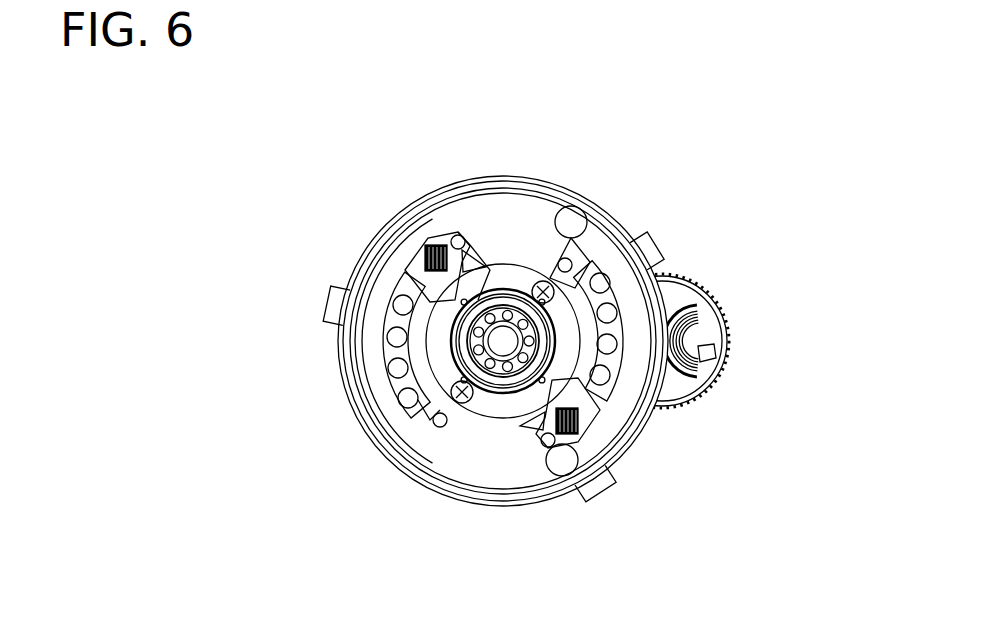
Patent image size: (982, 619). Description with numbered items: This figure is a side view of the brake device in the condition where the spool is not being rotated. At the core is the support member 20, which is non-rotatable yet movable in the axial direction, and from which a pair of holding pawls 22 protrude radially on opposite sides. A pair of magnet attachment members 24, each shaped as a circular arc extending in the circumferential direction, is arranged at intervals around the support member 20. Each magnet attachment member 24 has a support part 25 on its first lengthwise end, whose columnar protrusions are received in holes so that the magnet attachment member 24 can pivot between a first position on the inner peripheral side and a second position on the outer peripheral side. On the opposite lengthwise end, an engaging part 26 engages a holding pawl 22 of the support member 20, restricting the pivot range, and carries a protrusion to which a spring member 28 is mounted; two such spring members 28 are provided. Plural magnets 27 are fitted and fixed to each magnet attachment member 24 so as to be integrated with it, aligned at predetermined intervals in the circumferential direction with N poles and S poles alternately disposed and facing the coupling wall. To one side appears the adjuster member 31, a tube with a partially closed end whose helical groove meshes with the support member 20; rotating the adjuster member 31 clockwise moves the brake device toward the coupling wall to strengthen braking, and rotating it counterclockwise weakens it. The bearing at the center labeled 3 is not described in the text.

The bearing 3 is at (503, 345).
The support member 20 is at (478, 250).
The holding pawl 22 is at (616, 447).
The magnet attachment member 24 is at (405, 270).
The support part 25 is at (583, 240).
The engaging part 26 is at (530, 440).
The magnet 27 is at (612, 282).
The spring member 28 is at (617, 460).
The adjuster member 31 is at (733, 300).